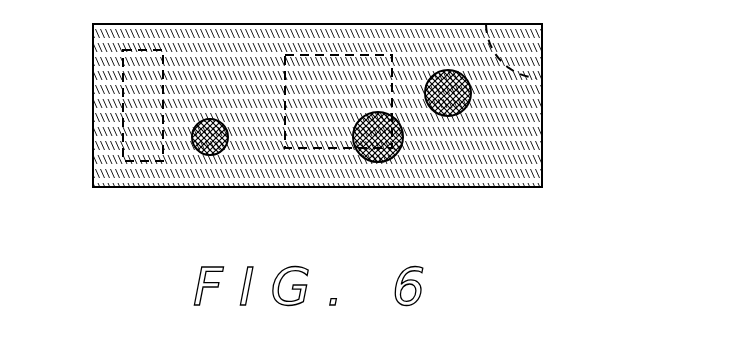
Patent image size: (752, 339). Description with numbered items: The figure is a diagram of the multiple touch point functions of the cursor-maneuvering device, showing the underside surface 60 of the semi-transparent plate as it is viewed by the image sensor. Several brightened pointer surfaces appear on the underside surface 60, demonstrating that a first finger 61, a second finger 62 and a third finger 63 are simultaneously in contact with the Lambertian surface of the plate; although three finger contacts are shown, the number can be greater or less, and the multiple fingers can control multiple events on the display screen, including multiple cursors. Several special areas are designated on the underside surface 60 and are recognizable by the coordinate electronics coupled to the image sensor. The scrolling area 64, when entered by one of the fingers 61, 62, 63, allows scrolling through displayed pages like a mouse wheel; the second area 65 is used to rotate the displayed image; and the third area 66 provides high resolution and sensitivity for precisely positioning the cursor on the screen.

The underside surface 60 is at (542, 167).
The first finger 61 is at (210, 155).
The second finger 62 is at (383, 161).
The third finger 63 is at (447, 116).
The scrolling area 64 is at (123, 107).
The rotation area 65 is at (523, 77).
The high resolution area 66 is at (305, 148).